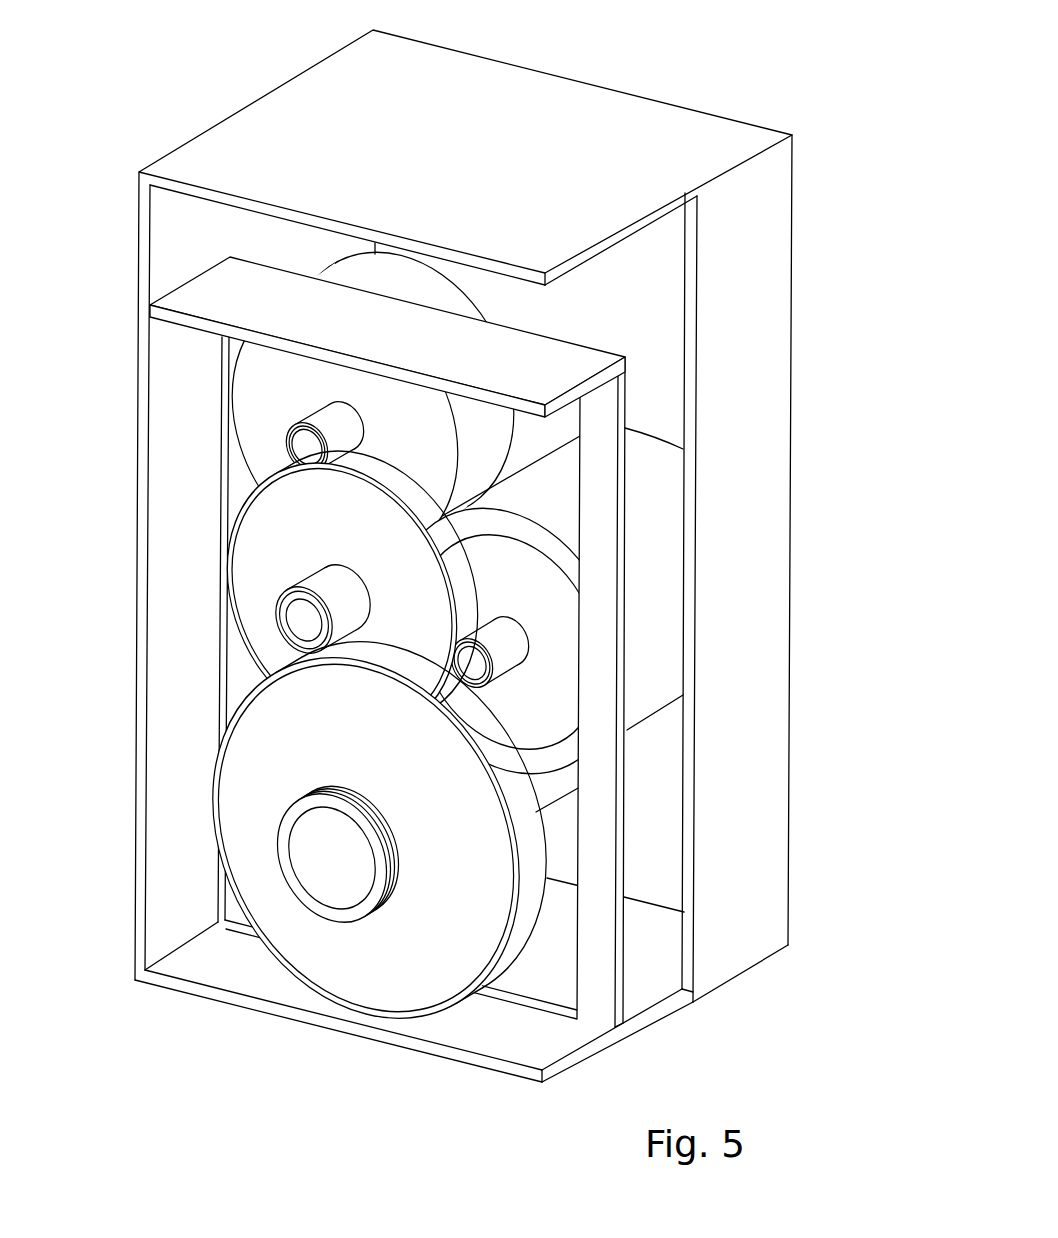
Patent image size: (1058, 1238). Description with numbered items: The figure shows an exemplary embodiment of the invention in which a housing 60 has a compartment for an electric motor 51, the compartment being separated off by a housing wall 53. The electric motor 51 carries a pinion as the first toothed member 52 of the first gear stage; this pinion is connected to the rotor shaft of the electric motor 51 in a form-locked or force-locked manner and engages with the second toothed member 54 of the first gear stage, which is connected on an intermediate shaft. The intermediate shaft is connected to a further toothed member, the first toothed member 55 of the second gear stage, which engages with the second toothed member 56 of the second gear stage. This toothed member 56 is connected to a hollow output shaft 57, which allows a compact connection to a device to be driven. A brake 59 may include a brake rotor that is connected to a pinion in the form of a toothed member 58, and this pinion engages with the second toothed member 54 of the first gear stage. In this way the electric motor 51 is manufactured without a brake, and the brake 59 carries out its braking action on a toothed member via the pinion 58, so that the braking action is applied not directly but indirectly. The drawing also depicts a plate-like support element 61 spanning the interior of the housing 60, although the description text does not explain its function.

The pinion gear 51 is at (509, 642).
The shaft boss of pinion gear 52 is at (515, 645).
The large gear 53 is at (552, 545).
The intermediate gear 54 is at (352, 592).
The shaft hub of intermediate gear 55 is at (333, 574).
The output gear 56 is at (379, 830).
The shaft hub of output gear 57 is at (317, 905).
The shaft boss of drive gear 58 is at (336, 414).
The drive gear 59 is at (406, 405).
The housing 60 is at (463, 556).
The support bracket 61 is at (387, 337).